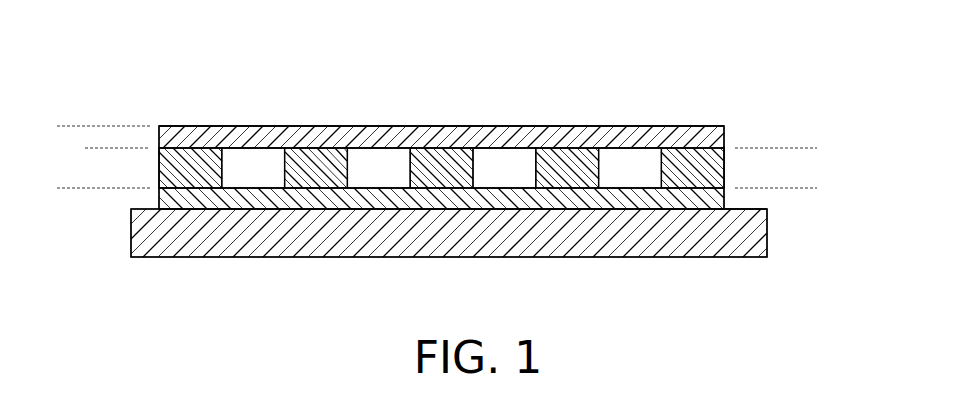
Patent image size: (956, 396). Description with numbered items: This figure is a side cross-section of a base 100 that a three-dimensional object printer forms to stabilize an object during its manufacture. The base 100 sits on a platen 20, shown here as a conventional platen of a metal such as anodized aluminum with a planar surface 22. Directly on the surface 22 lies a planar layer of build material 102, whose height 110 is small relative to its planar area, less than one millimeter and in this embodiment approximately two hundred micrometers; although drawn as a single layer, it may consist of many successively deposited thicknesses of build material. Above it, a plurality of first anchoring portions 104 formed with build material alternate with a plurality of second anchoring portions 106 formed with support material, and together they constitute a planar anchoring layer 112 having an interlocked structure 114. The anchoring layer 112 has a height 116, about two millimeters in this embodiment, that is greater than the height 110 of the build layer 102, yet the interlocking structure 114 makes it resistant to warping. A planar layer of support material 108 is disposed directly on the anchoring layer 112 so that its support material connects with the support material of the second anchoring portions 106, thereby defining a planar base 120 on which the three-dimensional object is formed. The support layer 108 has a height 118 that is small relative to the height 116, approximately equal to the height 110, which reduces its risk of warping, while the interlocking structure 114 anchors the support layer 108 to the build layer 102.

The base 100 is at (369, 283).
The interlocked structure 114 is at (222, 70).
The planar base 120 is at (298, 125).
The planar layer of support material 108 is at (724, 138).
The planar anchoring layer 112 is at (724, 168).
The first anchoring portions 104 is at (193, 153).
The second anchoring portions 106 is at (248, 155).
The planar layer of build material 102 is at (159, 198).
The platen 20 is at (131, 209).
The planar surface 22 is at (752, 208).
The height of planar layer of support material 118 is at (96, 166).
The height of planar layer of build material 110 is at (63, 186).
The height of planar anchoring layer 116 is at (807, 186).